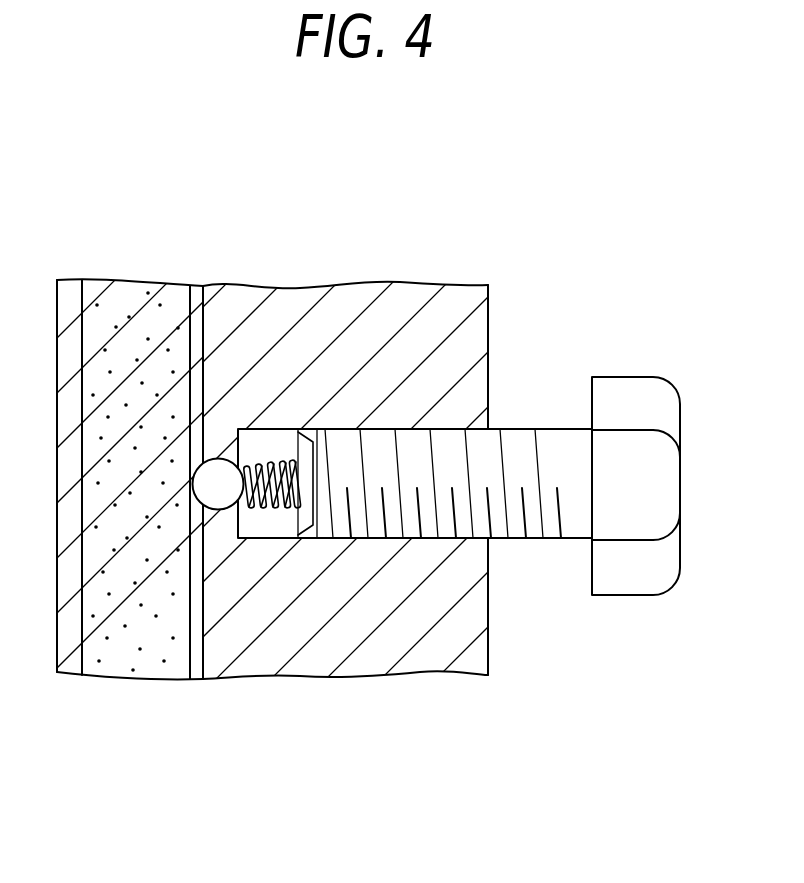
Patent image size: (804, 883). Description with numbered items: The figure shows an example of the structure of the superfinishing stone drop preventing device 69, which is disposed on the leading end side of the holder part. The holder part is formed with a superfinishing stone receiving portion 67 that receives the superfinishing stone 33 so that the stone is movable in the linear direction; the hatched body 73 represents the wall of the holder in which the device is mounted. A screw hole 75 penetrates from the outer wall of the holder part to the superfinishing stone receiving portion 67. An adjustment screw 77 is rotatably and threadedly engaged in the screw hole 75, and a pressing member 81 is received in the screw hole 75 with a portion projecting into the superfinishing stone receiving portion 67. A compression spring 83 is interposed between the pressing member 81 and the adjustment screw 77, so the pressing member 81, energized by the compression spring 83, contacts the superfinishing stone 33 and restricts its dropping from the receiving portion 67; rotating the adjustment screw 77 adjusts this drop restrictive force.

The superfinishing stone 33 is at (140, 663).
The superfinishing stone receiving portion 67 is at (225, 463).
The superfinishing stone drop preventing device 69 is at (475, 486).
The holder block 73 is at (348, 298).
The screw hole 75 is at (478, 434).
The adjustment screw 77 is at (672, 491).
The pressing member 81 is at (217, 498).
The compression spring 83 is at (268, 502).